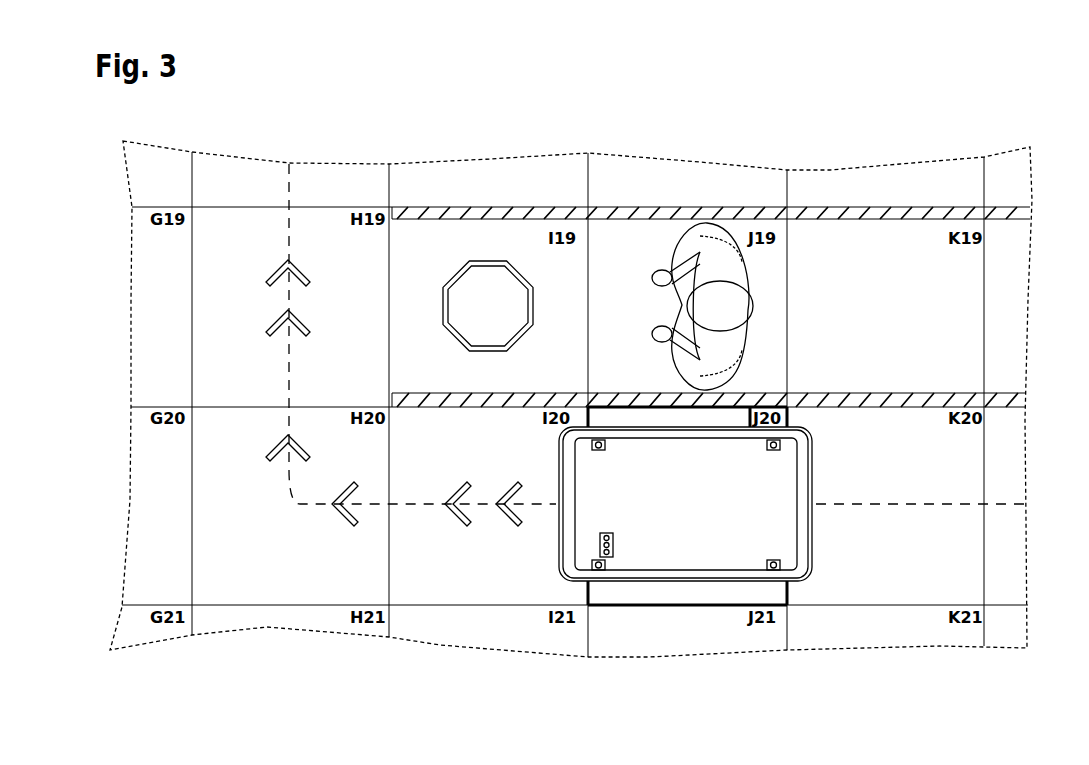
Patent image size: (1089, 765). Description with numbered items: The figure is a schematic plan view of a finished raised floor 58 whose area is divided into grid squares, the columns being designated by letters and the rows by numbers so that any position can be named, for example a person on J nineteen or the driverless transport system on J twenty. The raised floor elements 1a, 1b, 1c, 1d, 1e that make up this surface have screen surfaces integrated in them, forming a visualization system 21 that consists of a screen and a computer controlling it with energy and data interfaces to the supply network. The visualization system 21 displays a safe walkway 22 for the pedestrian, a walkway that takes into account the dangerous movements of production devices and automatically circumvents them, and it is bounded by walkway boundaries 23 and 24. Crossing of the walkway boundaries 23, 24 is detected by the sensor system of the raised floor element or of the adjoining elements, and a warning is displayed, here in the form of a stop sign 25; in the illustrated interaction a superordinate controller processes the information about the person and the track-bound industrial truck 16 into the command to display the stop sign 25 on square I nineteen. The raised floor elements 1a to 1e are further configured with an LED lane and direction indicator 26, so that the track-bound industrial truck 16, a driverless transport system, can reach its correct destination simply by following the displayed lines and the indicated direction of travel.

The raised floor 58 is at (858, 117).
The visualization system 21 is at (455, 266).
The stop sign 25 is at (488, 272).
The LED lane and direction indicator 26 is at (272, 326).
The safe walkway 22 is at (964, 325).
The walkway boundary 23 is at (1002, 220).
The walkway boundary 24 is at (970, 393).
The track-bound industrial truck 16 is at (645, 553).
The raised floor element 1a is at (210, 266).
The raised floor element 1b is at (208, 554).
The raised floor element 1c is at (481, 595).
The raised floor element 1d is at (728, 595).
The raised floor element 1e is at (886, 595).